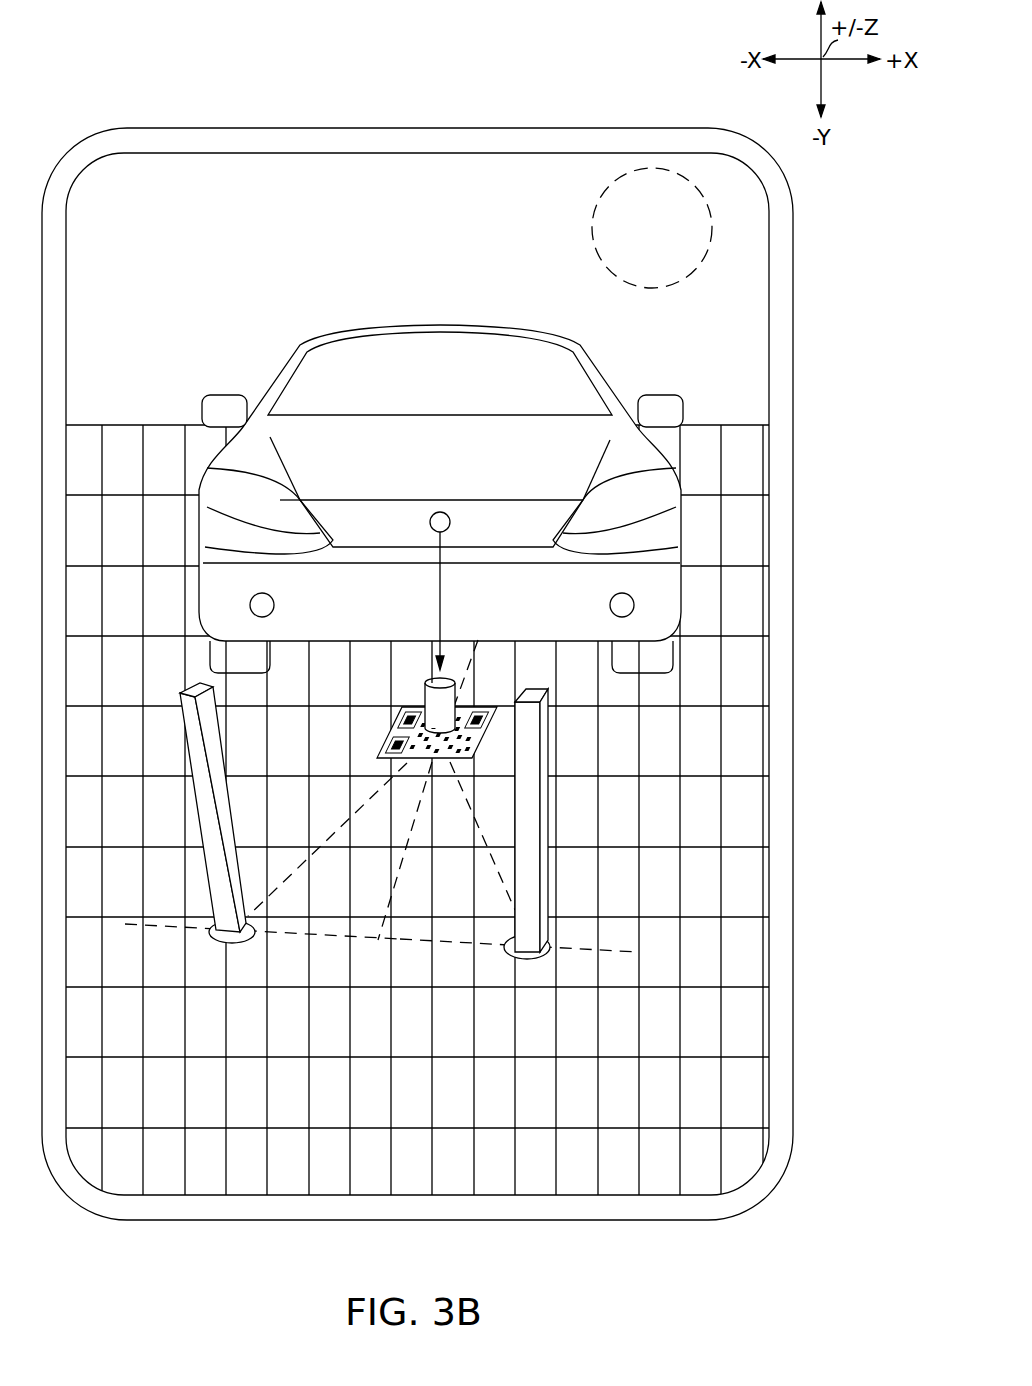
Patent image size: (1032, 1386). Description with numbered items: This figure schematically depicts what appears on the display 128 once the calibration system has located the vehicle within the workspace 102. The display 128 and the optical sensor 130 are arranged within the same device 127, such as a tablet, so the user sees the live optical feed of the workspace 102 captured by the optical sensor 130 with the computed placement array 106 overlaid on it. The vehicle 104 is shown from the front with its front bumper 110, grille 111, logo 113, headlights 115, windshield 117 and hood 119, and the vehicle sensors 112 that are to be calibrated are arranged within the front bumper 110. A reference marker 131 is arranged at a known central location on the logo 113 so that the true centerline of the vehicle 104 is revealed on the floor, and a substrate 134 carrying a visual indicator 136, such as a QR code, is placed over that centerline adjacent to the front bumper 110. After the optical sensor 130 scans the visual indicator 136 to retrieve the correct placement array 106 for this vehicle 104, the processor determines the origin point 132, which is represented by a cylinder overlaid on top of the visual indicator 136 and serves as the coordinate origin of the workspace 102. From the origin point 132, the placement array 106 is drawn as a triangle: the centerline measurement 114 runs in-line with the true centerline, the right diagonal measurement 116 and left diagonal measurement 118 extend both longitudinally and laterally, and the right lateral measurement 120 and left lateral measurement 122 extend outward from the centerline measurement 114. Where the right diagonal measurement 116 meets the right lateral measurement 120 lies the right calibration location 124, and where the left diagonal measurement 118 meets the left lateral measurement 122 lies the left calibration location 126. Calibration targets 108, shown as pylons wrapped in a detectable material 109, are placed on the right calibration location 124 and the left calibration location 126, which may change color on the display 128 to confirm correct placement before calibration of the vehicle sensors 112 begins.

The workspace 102 is at (456, 674).
The vehicle 104 is at (472, 470).
The placement array 106 is at (342, 952).
The calibration targets 108 is at (368, 849).
The material 109 is at (192, 745).
The front bumper 110 is at (675, 598).
The grille 111 is at (515, 510).
The vehicle sensors 112 is at (275, 605).
The logo 113 is at (442, 512).
The centerline measurement 114 is at (388, 895).
The headlights 115 is at (660, 468).
The right diagonal measurement 116 is at (487, 865).
The windshield 117 is at (585, 366).
The left diagonal measurement 118 is at (350, 815).
The hood 119 is at (312, 500).
The right lateral measurement 120 is at (455, 945).
The left lateral measurement 122 is at (300, 942).
The right calibration location 124 is at (527, 960).
The left calibration location 126 is at (215, 945).
The device 127 is at (793, 557).
The display 128 is at (769, 597).
The optical sensor 130 is at (594, 215).
The reference marker 131 is at (440, 602).
The origin point 132 is at (430, 683).
The substrate 134 is at (408, 750).
The visual indicator 136 is at (380, 748).